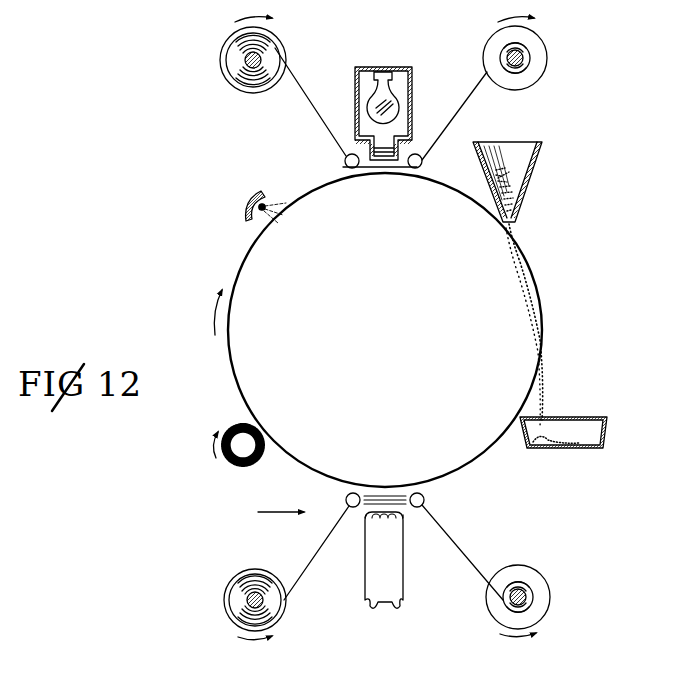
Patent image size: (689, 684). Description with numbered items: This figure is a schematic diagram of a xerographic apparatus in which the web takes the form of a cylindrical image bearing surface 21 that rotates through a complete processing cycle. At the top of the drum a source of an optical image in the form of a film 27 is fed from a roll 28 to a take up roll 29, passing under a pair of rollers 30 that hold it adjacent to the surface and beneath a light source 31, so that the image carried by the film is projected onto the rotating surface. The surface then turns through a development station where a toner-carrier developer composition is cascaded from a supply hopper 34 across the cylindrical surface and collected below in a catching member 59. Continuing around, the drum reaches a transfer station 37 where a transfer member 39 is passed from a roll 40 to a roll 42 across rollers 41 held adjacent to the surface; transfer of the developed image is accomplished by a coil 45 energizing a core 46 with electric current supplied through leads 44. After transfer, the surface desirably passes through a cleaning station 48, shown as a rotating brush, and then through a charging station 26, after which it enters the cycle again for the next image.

The cylindrical image bearing surface 21 is at (486, 450).
The charging station 26 is at (246, 222).
The film 27 is at (304, 86).
The roll 28 is at (225, 48).
The take up roll 29 is at (488, 34).
The rollers 30 is at (345, 161).
The light source 31 is at (357, 67).
The supply hopper 34 is at (540, 175).
The transfer station 37 is at (266, 513).
The transfer member 39 is at (312, 551).
The roll 40 is at (225, 597).
The rollers 41 is at (346, 499).
The roll 42 is at (550, 596).
The leads 44 is at (384, 572).
The coil 45 is at (365, 521).
The core 46 is at (404, 512).
The cleaning station 48 is at (238, 454).
The catching member 59 is at (608, 428).